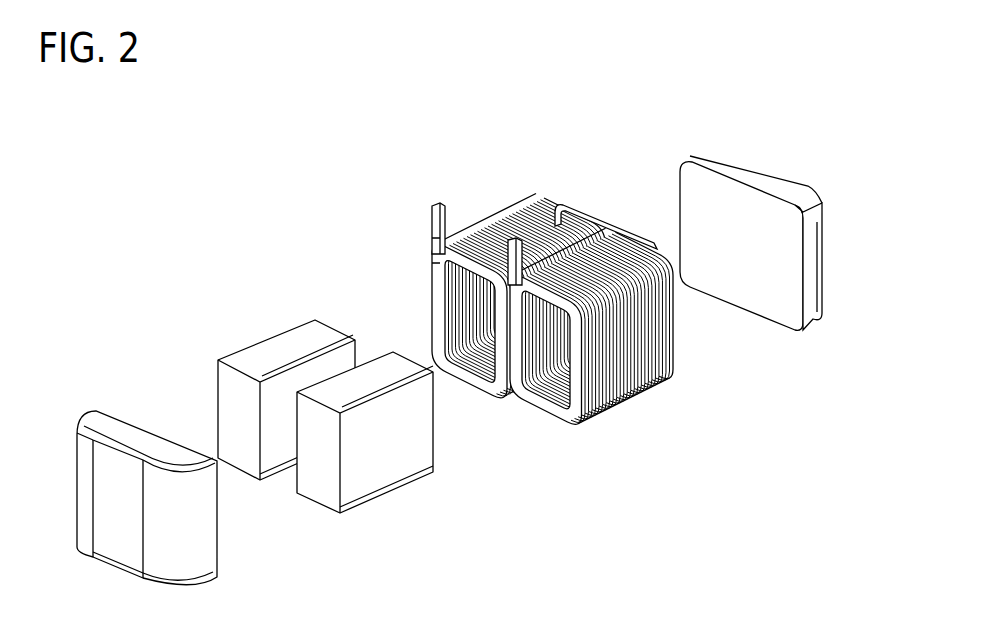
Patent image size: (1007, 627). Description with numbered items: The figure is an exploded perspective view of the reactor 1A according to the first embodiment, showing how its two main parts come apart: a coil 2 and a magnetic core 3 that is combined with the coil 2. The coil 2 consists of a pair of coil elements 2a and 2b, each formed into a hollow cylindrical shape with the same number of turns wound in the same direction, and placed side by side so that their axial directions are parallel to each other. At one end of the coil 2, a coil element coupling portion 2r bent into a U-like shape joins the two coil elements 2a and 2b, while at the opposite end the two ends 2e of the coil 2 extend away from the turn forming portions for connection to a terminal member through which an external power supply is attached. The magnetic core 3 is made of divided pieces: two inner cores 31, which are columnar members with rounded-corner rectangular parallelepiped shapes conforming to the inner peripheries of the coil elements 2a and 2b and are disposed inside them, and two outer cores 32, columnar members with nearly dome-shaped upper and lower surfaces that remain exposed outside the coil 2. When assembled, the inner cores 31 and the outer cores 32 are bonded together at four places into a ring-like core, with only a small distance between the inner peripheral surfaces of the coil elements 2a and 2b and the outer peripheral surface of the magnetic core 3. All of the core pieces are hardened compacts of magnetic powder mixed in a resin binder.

The reactor 1A is at (441, 332).
The coil 2 is at (521, 308).
The coil element 2a is at (487, 230).
The coil element 2b is at (632, 410).
The end of the coil 2e is at (437, 218).
The coil element coupling portion 2r is at (568, 205).
The magnetic core 3 is at (441, 332).
The inner core 31 is at (268, 352).
The outer core 32 is at (725, 168).